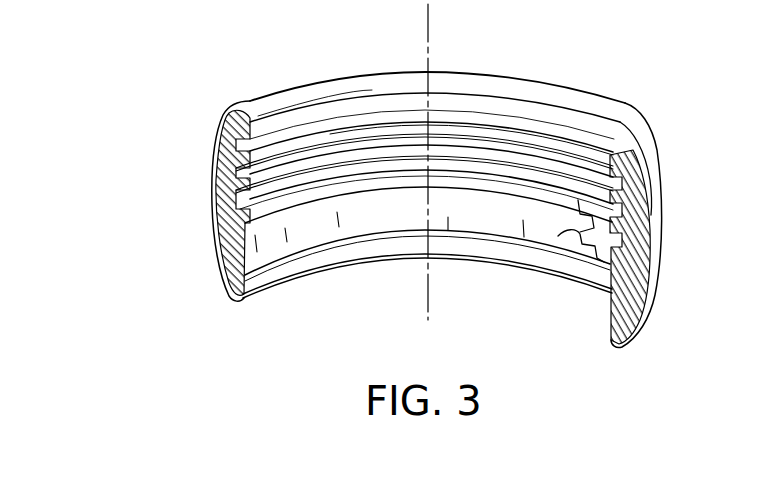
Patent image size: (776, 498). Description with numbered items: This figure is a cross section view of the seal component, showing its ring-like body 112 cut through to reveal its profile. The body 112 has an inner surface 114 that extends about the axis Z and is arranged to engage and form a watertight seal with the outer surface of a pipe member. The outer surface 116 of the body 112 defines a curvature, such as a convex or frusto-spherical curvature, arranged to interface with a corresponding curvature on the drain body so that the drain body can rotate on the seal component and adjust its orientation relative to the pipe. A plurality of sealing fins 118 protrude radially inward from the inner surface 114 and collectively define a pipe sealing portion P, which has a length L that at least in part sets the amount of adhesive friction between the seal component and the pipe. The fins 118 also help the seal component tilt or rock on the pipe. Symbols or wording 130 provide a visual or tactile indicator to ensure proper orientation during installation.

The body 112 is at (248, 82).
The inner surface 114 is at (262, 247).
The outer surface 116 is at (641, 157).
The sealing fins 118 is at (558, 236).
The symbols or wording 130 is at (223, 278).
The length of the pipe sealing portion L is at (590, 199).
The axis Z is at (428, 17).